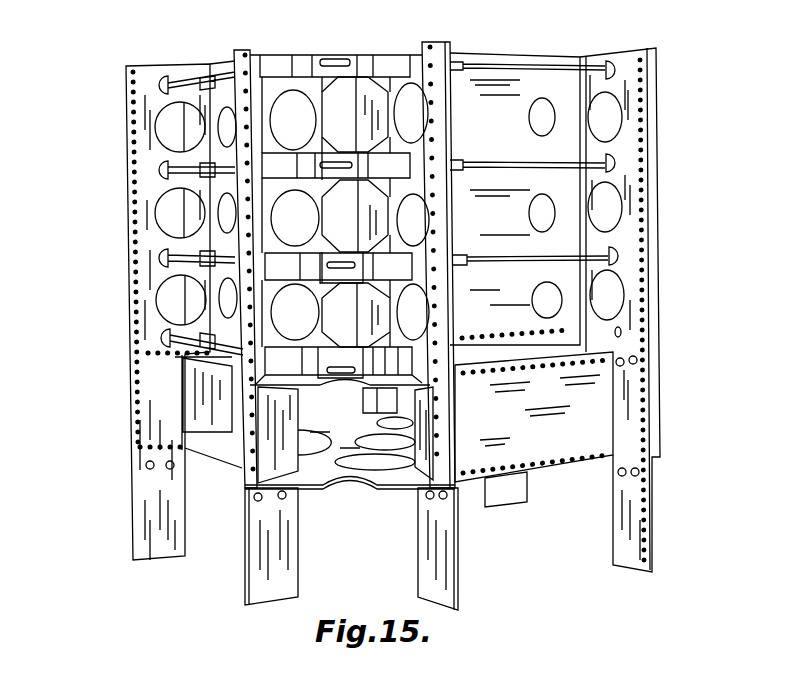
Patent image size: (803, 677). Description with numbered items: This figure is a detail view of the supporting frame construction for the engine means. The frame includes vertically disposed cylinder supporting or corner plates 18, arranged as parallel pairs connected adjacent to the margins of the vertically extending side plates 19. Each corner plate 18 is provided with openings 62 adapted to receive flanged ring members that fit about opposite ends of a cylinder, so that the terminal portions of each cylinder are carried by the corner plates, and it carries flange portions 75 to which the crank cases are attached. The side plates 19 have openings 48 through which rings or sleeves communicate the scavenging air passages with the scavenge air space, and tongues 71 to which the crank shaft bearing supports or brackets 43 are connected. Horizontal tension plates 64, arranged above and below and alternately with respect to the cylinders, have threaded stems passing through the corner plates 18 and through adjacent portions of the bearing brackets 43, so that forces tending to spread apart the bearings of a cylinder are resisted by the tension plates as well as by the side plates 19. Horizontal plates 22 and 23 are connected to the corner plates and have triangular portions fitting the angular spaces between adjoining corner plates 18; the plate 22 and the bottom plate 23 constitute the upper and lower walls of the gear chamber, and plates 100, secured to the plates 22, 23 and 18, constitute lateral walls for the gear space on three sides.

The cylinder supporting or corner plate 18 is at (632, 184).
The side plate 19 is at (507, 60).
The horizontal plate 22 is at (312, 388).
The bottom plate 23 is at (330, 490).
The corner bracket or bearing support 43 is at (308, 360).
The opening 48 is at (531, 120).
The opening 62 is at (610, 290).
The horizontal tension plate 64 is at (503, 168).
The tongue 71 is at (367, 190).
The flange portion 75 is at (443, 310).
The plate 100 is at (563, 443).